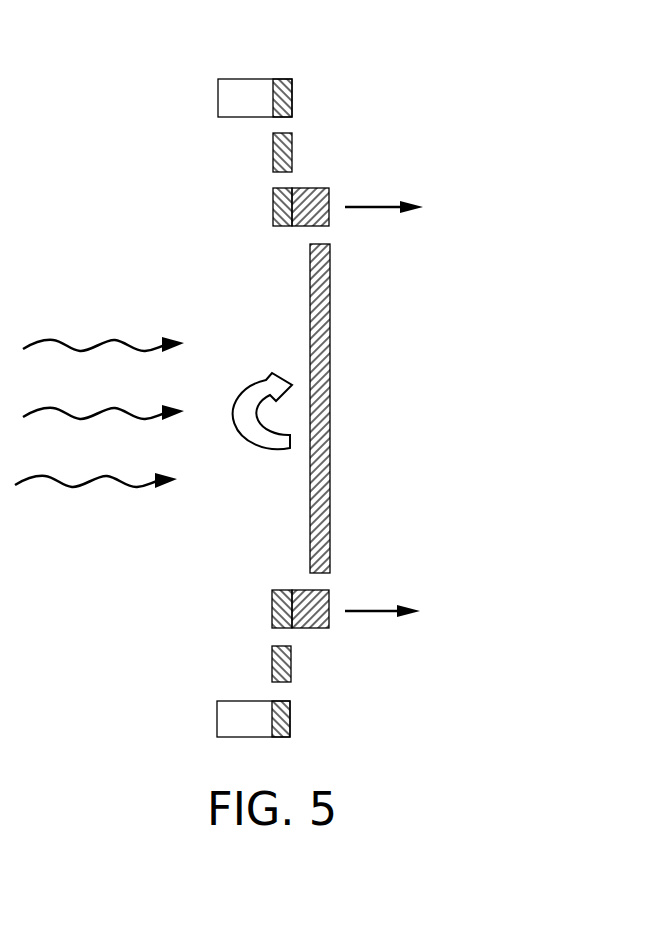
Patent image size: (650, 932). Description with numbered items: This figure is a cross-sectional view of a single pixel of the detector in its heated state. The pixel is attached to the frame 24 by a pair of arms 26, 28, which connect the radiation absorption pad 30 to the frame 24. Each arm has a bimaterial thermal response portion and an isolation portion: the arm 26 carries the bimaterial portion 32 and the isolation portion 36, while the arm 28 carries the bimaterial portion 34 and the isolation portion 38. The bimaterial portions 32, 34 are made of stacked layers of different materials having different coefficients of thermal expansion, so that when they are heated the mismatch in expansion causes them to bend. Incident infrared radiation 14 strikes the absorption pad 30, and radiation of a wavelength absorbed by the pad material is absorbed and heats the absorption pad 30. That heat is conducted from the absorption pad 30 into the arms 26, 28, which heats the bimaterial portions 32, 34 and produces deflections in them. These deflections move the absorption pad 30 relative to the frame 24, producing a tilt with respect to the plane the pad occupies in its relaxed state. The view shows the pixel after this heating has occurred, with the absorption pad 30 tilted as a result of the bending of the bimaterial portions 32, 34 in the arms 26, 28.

The incident infrared radiation 14 is at (82, 312).
The frame 24 is at (237, 97).
The arm 26 is at (333, 150).
The arm 28 is at (352, 657).
The radiation absorption pad 30 is at (330, 390).
The bimaterial thermal response portion 32 is at (273, 205).
The bimaterial thermal response portion 34 is at (272, 603).
The isolation portion 36 is at (273, 152).
The isolation portion 38 is at (272, 660).